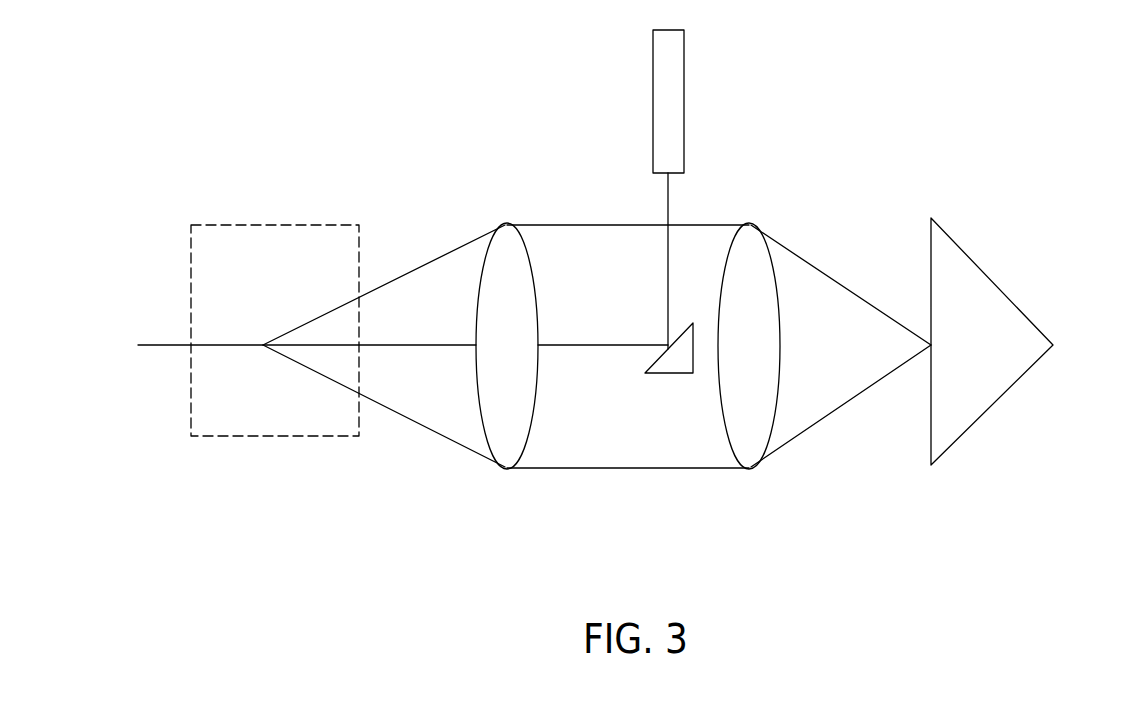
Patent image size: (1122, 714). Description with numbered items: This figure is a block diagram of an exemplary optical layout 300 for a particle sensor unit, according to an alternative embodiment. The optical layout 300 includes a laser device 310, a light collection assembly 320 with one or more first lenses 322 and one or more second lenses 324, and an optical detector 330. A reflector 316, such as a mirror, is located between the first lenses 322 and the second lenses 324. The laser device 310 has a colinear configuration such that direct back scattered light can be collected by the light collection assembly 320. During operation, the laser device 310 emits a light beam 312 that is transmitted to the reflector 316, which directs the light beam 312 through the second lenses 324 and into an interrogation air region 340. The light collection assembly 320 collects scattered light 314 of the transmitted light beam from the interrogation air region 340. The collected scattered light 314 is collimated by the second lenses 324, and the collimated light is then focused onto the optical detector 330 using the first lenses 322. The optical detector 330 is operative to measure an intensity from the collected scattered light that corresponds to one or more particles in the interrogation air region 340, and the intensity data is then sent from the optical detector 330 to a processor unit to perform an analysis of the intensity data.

The optical layout 300 is at (867, 142).
The laser device 310 is at (684, 60).
The light beam 312 is at (669, 197).
The scattered light 314 is at (435, 258).
The reflector 316 is at (669, 375).
The light collection assembly 320 is at (676, 385).
The first lenses 322 is at (782, 353).
The second lenses 324 is at (532, 278).
The optical detector 330 is at (1005, 293).
The interrogation air region 340 is at (284, 440).